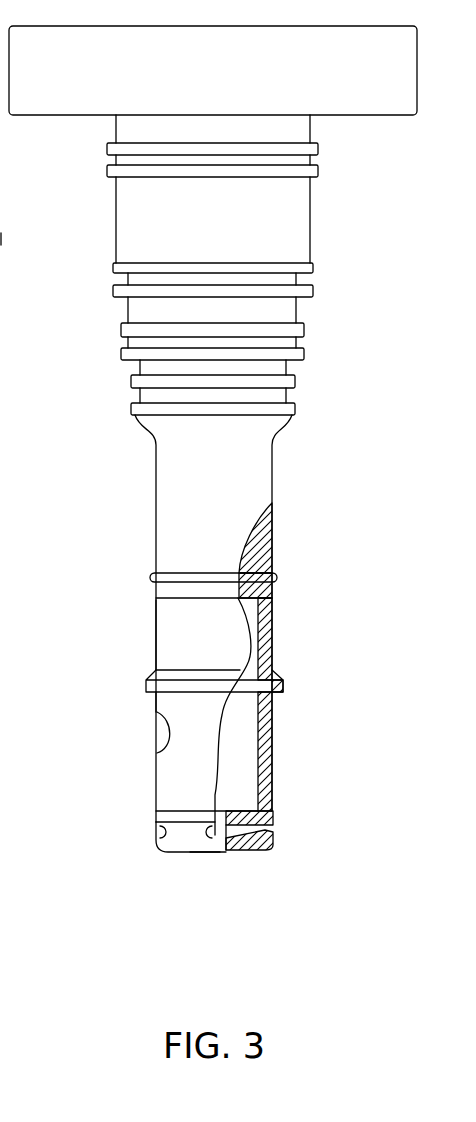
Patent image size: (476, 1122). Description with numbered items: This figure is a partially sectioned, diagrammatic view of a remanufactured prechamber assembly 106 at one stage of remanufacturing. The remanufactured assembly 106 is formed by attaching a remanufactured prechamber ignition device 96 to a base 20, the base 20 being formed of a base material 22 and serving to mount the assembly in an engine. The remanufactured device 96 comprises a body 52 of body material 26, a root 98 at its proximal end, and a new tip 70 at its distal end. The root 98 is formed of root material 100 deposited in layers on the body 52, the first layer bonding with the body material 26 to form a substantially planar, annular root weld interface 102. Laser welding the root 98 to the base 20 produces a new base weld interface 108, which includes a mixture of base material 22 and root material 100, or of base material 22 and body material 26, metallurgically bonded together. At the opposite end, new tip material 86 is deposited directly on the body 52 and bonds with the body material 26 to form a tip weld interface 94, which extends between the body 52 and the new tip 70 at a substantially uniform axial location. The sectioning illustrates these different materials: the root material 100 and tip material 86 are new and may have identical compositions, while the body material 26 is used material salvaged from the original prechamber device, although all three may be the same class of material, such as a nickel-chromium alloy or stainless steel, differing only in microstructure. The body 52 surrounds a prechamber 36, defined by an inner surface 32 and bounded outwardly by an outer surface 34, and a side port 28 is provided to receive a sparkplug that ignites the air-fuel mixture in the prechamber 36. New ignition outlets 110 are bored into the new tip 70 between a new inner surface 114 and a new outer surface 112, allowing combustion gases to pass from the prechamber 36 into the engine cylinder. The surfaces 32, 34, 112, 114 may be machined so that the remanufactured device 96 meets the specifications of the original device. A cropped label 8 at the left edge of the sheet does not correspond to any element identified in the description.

The container 8 is at (6, 228).
The base 20 is at (273, 490).
The base material 22 is at (268, 455).
The body material 26 is at (262, 650).
The side port 28 is at (160, 735).
The inner surface 32 is at (263, 705).
The outer surface 34 is at (165, 668).
The prechamber 36 is at (248, 742).
The body 52 is at (156, 705).
The new tip 70 is at (165, 845).
The tip material 86 is at (186, 848).
The tip weld interface 94 is at (156, 805).
The remanufactured prechamber ignition device 96 is at (156, 648).
The root 98 is at (158, 592).
The root material 100 is at (185, 592).
The root weld interface 102 is at (182, 598).
The remanufactured prechamber assembly 106 is at (367, 198).
The new base weld interface 108 is at (150, 578).
The new ignition outlets 110 is at (160, 835).
The new outer surface 112 is at (196, 850).
The new inner surface 114 is at (228, 848).